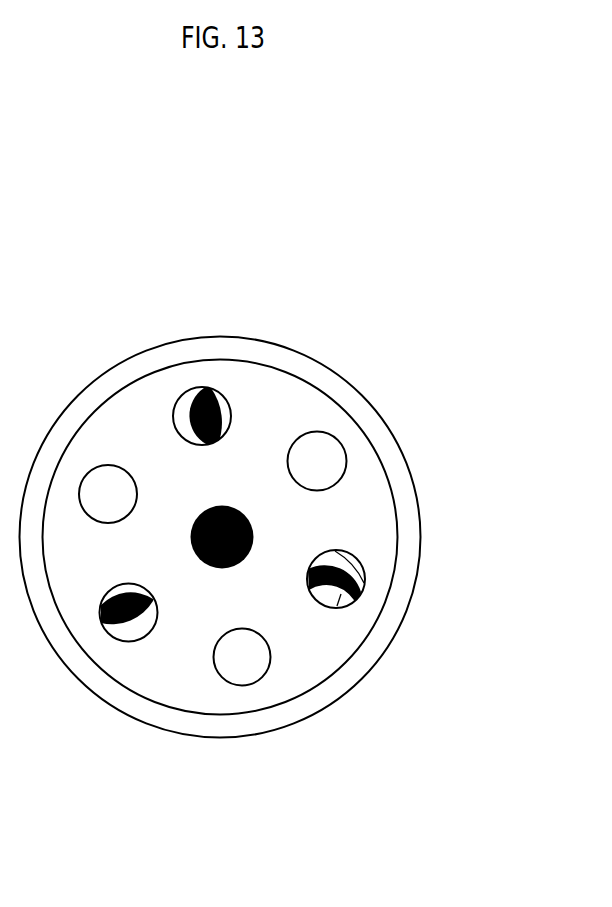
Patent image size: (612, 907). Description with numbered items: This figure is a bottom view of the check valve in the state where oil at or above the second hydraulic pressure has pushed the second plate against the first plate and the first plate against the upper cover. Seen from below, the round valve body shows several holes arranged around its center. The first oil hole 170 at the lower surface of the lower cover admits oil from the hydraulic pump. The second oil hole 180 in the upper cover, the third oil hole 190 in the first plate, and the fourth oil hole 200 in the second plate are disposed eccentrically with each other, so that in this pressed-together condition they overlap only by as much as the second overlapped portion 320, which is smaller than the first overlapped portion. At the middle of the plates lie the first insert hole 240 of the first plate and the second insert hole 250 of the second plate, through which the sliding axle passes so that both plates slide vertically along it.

The first oil hole 170 is at (240, 672).
The second oil hole 180 is at (332, 606).
The third oil hole 190 is at (355, 593).
The fourth oil hole 200 is at (364, 578).
The first insert hole 240 is at (268, 431).
The second insert hole 250 is at (224, 505).
The second overlapped portion 320 is at (327, 596).